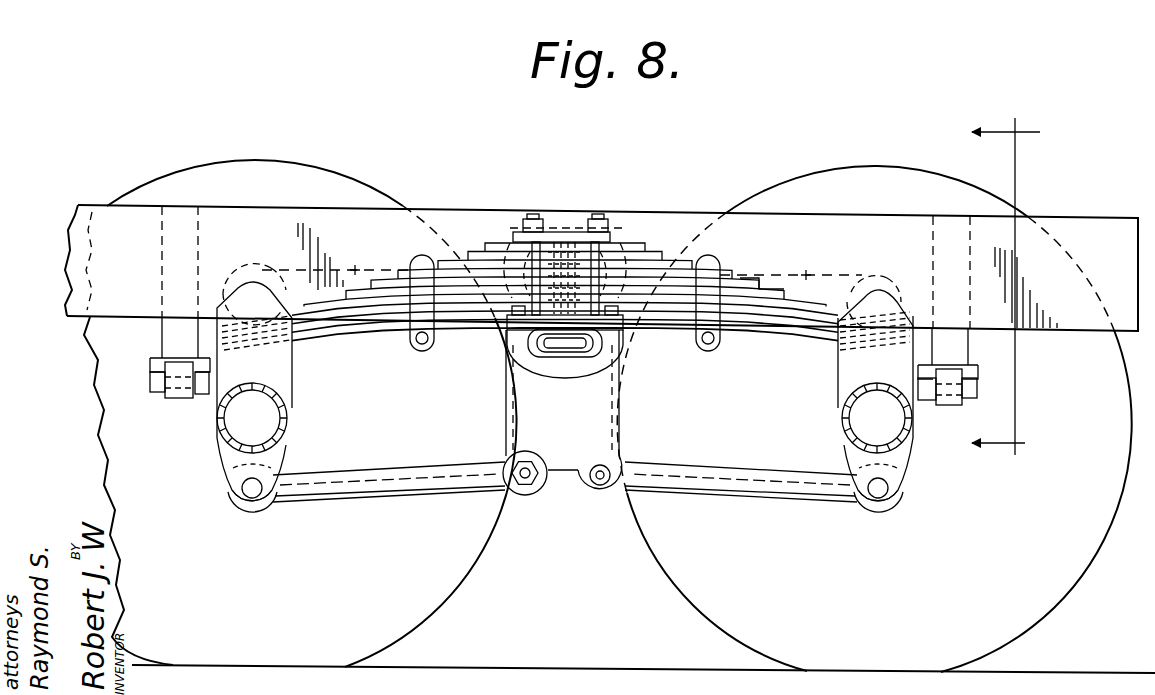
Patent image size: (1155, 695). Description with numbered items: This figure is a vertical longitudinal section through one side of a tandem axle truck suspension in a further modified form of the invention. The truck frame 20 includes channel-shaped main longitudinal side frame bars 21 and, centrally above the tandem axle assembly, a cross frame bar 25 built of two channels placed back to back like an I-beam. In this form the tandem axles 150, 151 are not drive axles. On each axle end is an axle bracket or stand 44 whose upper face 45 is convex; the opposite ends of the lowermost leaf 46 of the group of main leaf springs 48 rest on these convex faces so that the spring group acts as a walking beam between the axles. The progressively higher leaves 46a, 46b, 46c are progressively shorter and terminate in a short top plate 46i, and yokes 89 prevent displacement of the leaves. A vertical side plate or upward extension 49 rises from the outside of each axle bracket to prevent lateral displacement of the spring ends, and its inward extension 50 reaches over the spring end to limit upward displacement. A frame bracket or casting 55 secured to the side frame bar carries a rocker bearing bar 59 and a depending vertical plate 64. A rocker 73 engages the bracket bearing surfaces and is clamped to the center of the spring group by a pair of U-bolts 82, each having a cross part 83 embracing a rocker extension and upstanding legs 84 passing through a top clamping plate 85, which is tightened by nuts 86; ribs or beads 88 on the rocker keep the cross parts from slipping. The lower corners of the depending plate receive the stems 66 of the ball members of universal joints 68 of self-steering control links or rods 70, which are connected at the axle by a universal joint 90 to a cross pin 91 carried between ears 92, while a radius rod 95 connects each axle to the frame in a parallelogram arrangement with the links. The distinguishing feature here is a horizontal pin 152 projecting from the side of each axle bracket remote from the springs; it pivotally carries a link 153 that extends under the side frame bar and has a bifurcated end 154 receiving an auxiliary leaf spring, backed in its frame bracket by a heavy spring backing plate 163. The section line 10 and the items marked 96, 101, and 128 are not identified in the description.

The section line 10 is at (1006, 290).
The frame 20 is at (1090, 215).
The main longitudinal side frame bar 21 is at (78, 220).
The cross frame bar 25 is at (512, 224).
The axle bracket or stand 44 is at (294, 384).
The upper face of axle bracket 45 is at (284, 340).
The lowermost leaf 46 is at (565, 342).
The leaf 46a is at (342, 336).
The leaf 46b is at (398, 337).
The leaf 46c is at (565, 326).
The top plate 46i is at (641, 245).
The group of main leaf springs 48 is at (740, 278).
The vertical side plate or upward extension 49 is at (236, 294).
The inward extension 50 is at (240, 270).
The frame bracket or casting 55 is at (512, 372).
The rocker bearing bar 59 is at (623, 330).
The vertical plate 64 is at (562, 412).
The stems 66 is at (593, 466).
The universal joint 68 is at (538, 494).
The self-steering control link or rod 70 is at (430, 498).
The rocker 73 is at (604, 347).
The U-bolt 82 is at (534, 214).
The cross part of U-bolt 83 is at (571, 358).
The upstanding legs of U-bolt 84 is at (612, 239).
The top clamping plate 85 is at (572, 234).
The nuts 86 is at (602, 218).
The ribs or beads 88 is at (561, 351).
The yokes 89 is at (420, 256).
The universal joint 90 is at (255, 522).
The cross pin 91 is at (258, 497).
The ears 92 is at (238, 501).
The radius rod 95 is at (562, 263).
The hidden circle 96 is at (513, 252).
The hanger pivot circle 101 is at (257, 262).
The wheel 128 is at (458, 580).
The axle 150 is at (290, 425).
The axle 151 is at (840, 432).
The horizontal pin 152 is at (160, 395).
The link 153 is at (150, 380).
The bifurcated end 154 is at (150, 362).
The spring backing plate 163 is at (160, 333).